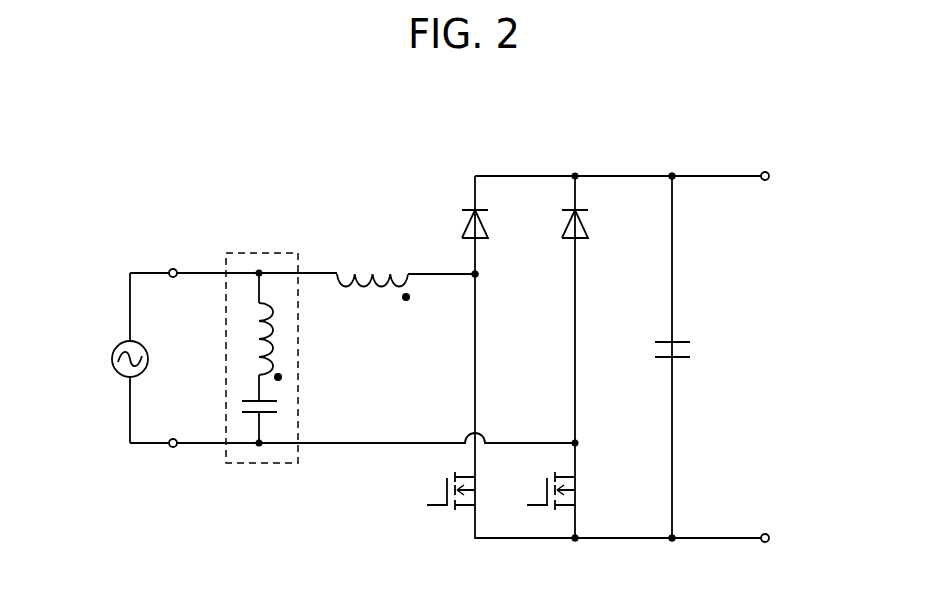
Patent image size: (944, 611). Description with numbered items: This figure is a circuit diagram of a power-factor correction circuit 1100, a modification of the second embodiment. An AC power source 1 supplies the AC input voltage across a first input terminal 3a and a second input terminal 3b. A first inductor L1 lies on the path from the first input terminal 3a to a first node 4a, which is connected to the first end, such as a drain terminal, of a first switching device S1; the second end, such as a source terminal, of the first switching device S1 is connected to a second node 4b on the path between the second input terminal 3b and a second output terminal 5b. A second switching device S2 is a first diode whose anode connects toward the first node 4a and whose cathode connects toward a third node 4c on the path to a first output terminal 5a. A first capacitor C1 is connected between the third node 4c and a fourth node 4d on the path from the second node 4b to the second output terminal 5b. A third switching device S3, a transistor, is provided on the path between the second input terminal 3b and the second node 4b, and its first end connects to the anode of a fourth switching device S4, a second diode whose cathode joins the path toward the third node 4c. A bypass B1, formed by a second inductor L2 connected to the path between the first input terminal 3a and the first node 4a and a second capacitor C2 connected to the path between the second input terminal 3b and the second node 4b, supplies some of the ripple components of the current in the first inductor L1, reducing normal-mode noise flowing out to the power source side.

The power-factor correction circuit 1100 is at (375, 115).
The AC power source 1 is at (112, 352).
The first input terminal 3a is at (170, 268).
The second input terminal 3b is at (170, 448).
The bypass B1 is at (286, 334).
The second inductor L2 is at (279, 340).
The second capacitor C2 is at (279, 410).
The first inductor L1 is at (372, 264).
The first node 4a is at (479, 275).
The second node 4b is at (577, 542).
The third node 4c is at (675, 172).
The fourth node 4d is at (675, 541).
The first switching device S1 is at (467, 491).
The second switching device S2 is at (493, 221).
The third switching device S3 is at (567, 491).
The fourth switching device S4 is at (593, 221).
The first capacitor C1 is at (689, 351).
The first output terminal 5a is at (784, 180).
The second output terminal 5b is at (784, 540).